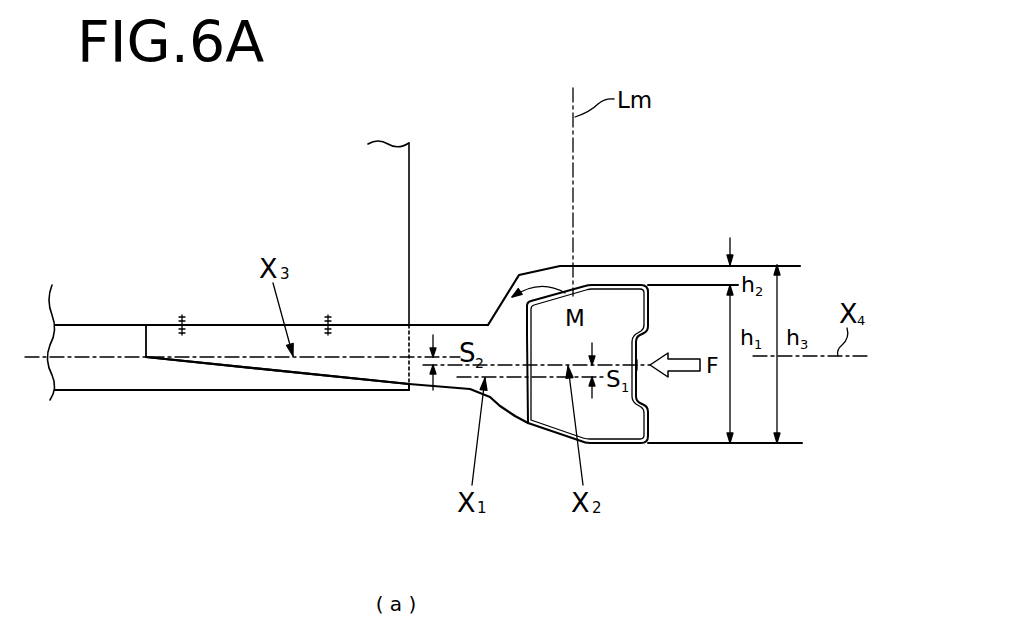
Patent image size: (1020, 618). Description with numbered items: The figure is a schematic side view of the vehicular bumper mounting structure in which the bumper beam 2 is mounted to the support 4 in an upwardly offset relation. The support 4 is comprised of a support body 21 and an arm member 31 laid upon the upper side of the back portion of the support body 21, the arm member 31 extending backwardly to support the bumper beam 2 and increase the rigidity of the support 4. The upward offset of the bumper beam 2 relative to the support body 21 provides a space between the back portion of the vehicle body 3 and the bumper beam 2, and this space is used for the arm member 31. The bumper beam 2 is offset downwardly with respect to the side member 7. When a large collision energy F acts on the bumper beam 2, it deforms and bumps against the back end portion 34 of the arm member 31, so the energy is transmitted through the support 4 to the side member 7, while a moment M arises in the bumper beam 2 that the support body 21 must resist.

The bumper beam 2 is at (637, 283).
The vehicle body 3 is at (411, 183).
The support 4 is at (247, 373).
The side member 7 is at (113, 391).
The support body 21 is at (326, 377).
The arm member 31 is at (518, 274).
The back end portion 34 is at (577, 276).